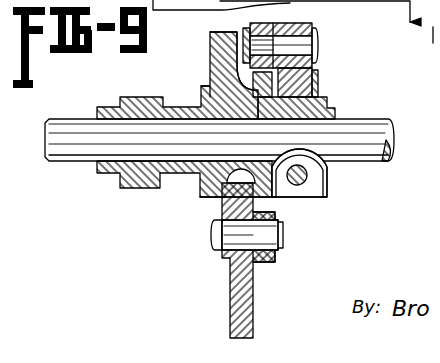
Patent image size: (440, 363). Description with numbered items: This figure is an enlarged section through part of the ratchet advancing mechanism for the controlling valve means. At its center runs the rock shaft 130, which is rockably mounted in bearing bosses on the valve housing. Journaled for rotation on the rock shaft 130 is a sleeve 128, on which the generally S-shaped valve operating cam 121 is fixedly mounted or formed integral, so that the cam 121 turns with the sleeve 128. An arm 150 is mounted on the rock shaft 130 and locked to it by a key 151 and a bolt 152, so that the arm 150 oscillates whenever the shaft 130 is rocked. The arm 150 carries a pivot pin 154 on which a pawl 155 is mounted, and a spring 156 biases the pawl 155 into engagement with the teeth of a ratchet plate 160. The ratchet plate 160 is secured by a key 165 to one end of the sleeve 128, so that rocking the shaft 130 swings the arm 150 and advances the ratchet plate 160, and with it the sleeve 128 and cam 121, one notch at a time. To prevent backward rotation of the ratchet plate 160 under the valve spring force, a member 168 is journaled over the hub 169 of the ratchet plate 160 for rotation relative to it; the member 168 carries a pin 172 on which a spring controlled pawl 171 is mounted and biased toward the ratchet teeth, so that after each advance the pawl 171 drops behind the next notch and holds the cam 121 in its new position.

The rock shaft 130 is at (52, 130).
The valve operating cam 121 is at (138, 184).
The sleeve 128 is at (182, 169).
The key 165 is at (222, 197).
The spring controlled pawl 171 is at (263, 262).
The pin 172 is at (283, 238).
The key 151 is at (318, 186).
The bolt 152 is at (301, 186).
The arm 150 is at (309, 68).
The pivot pin 154 is at (310, 44).
The pawl 155 is at (250, 27).
The spring 156 is at (313, 80).
The ratchet plate 160 is at (324, 100).
The member 168 is at (212, 62).
The hub 169 is at (209, 82).